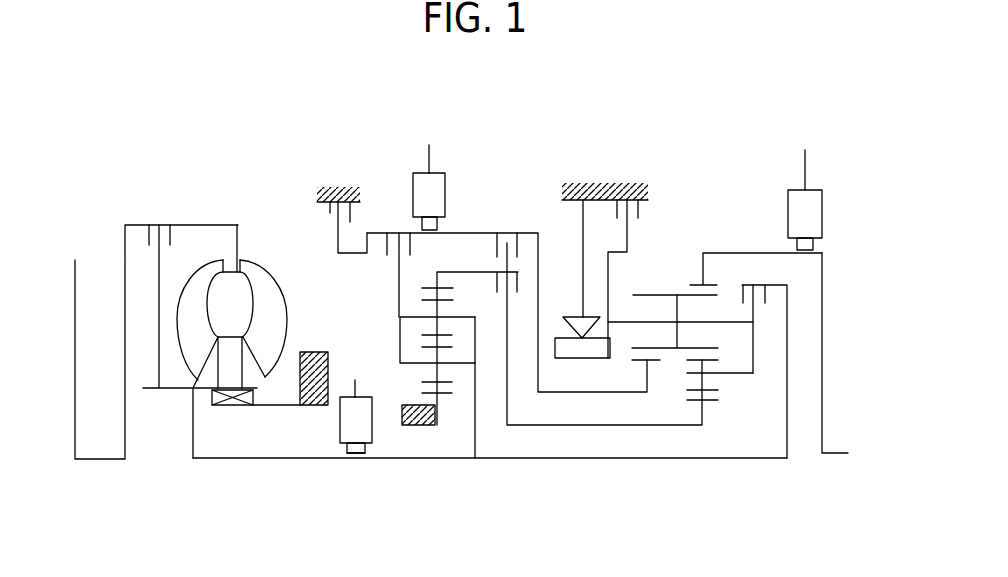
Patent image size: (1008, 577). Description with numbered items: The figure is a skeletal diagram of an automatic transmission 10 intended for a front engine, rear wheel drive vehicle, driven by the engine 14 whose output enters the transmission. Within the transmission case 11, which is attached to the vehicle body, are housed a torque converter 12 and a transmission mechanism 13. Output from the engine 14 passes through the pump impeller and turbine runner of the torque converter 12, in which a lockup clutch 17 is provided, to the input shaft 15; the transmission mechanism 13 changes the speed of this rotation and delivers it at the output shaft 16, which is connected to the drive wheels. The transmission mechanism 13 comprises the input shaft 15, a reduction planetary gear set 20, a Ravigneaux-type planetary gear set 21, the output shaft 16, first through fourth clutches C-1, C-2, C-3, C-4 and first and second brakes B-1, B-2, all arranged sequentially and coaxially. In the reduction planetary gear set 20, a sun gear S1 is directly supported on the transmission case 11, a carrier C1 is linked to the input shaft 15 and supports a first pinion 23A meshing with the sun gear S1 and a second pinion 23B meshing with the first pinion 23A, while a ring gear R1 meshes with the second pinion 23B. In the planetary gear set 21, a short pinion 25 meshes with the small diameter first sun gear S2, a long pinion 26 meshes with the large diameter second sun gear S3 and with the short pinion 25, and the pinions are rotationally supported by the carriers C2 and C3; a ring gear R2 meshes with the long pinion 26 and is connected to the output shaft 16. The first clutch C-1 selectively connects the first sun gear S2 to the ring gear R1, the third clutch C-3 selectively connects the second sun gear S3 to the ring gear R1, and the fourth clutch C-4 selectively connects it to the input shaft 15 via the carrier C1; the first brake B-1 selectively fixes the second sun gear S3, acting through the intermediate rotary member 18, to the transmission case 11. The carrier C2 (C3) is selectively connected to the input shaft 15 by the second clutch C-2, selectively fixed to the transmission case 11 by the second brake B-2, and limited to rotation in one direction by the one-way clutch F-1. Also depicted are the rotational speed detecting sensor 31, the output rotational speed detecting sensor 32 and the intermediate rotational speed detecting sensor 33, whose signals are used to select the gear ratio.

The automatic transmission 10 is at (530, 176).
The transmission case 11 is at (592, 188).
The torque converter 12 is at (257, 238).
The transmission mechanism 13 is at (689, 183).
The engine 14 is at (100, 460).
The input shaft 15 is at (345, 460).
The output shaft 16 is at (837, 453).
The lockup clutch 17 is at (153, 211).
The intermediate rotary member 18 is at (528, 232).
The reduction planetary gear set 20 is at (376, 304).
The planetary gear set 21 is at (683, 256).
The first pinion 23A is at (423, 373).
The second pinion 23B is at (437, 330).
The short pinion 25 is at (703, 382).
The long pinion 26 is at (655, 293).
The rotational speed detecting sensor 31 is at (347, 425).
The output rotational speed detecting sensor 32 is at (818, 210).
The intermediate rotational speed detecting sensor 33 is at (438, 185).
The first brake B-1 is at (342, 205).
The second brake B-2 is at (617, 259).
The first clutch C-1 is at (477, 268).
The second clutch C-2 is at (764, 359).
The third clutch C-3 is at (595, 315).
The fourth clutch C-4 is at (388, 261).
The one-way clutch F-1 is at (582, 295).
The ring gear R1 is at (427, 287).
The ring gear R2 is at (713, 284).
The sun gear S1 is at (443, 395).
The first sun gear S2 is at (708, 402).
The second sun gear S3 is at (660, 358).
The carrier C1 is at (400, 348).
The carrier C2 is at (755, 360).
The carrier C3 is at (753, 330).